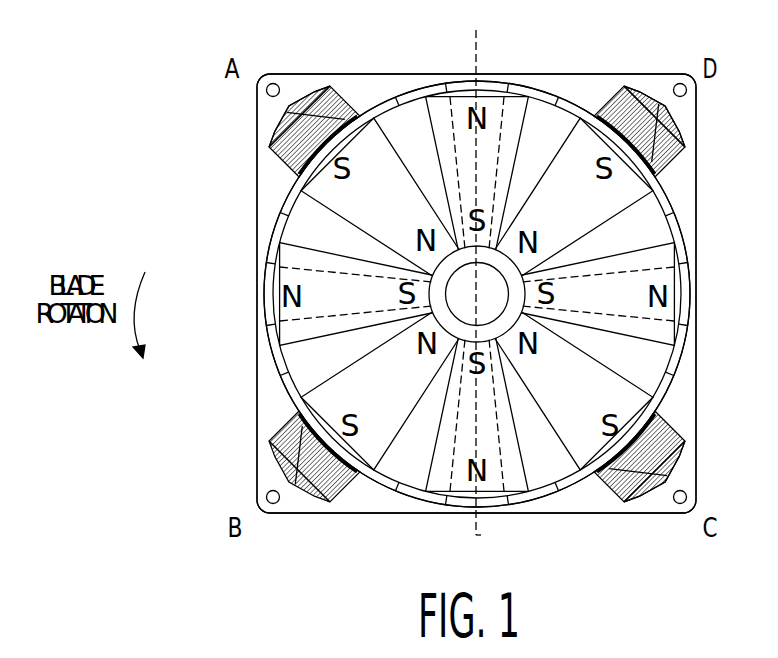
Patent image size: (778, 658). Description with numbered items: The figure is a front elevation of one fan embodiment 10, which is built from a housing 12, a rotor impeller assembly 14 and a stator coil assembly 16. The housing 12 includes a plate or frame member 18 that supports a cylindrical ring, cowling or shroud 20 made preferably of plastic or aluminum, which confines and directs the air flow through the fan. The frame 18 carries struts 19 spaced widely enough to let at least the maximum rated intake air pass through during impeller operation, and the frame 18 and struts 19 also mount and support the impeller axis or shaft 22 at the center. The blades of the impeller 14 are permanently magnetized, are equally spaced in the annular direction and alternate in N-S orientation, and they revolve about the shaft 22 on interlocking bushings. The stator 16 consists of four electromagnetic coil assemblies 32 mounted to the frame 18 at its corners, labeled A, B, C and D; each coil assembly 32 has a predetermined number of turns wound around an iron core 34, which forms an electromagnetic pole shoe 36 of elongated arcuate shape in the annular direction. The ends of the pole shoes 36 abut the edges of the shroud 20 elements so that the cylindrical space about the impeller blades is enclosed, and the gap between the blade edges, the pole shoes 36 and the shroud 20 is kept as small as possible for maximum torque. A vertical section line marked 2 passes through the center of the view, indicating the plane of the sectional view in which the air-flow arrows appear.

The fan embodiment 10 is at (196, 220).
The housing 12 is at (576, 66).
The rotor impeller assembly 14 is at (628, 196).
The stator coil assembly 16 is at (692, 136).
The frame member 18 is at (268, 421).
The struts 19 is at (492, 178).
The shroud 20 is at (684, 352).
The shaft 22 is at (452, 309).
The electromagnetic coil assemblies 32 is at (273, 148).
The iron core 34 is at (297, 99).
The pole shoe 36 is at (283, 199).
The section line 2- 2 is at (485, 35).